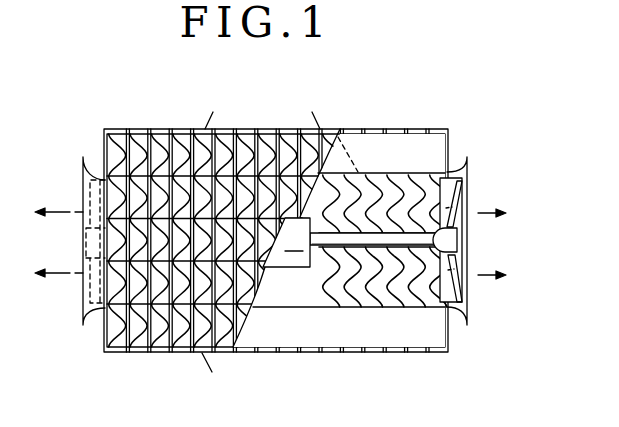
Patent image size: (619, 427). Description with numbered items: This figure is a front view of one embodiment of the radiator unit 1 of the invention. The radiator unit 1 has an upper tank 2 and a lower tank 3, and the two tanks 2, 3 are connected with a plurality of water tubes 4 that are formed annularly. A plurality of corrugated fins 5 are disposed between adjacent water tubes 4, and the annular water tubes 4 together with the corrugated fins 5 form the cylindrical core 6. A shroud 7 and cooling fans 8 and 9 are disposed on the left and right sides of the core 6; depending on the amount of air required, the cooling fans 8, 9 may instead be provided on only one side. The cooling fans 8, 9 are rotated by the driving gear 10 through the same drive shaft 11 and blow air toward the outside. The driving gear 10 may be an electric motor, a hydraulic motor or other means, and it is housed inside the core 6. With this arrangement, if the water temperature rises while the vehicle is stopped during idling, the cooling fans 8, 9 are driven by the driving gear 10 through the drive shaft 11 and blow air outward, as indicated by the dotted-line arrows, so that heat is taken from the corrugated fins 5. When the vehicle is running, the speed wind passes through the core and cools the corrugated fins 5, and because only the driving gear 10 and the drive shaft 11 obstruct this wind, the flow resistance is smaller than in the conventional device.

The radiator unit 1 is at (333, 125).
The upper tank 2 is at (402, 150).
The lower tank 3 is at (402, 327).
The water tube 4 is at (173, 129).
The corrugated fin 5 is at (132, 129).
The cylindrical core 6 is at (256, 129).
The shroud 7 is at (83, 183).
The cooling fan 8 is at (88, 292).
The cooling fan 9 is at (452, 198).
The driving gear 10 is at (286, 242).
The drive shaft 11 is at (367, 307).